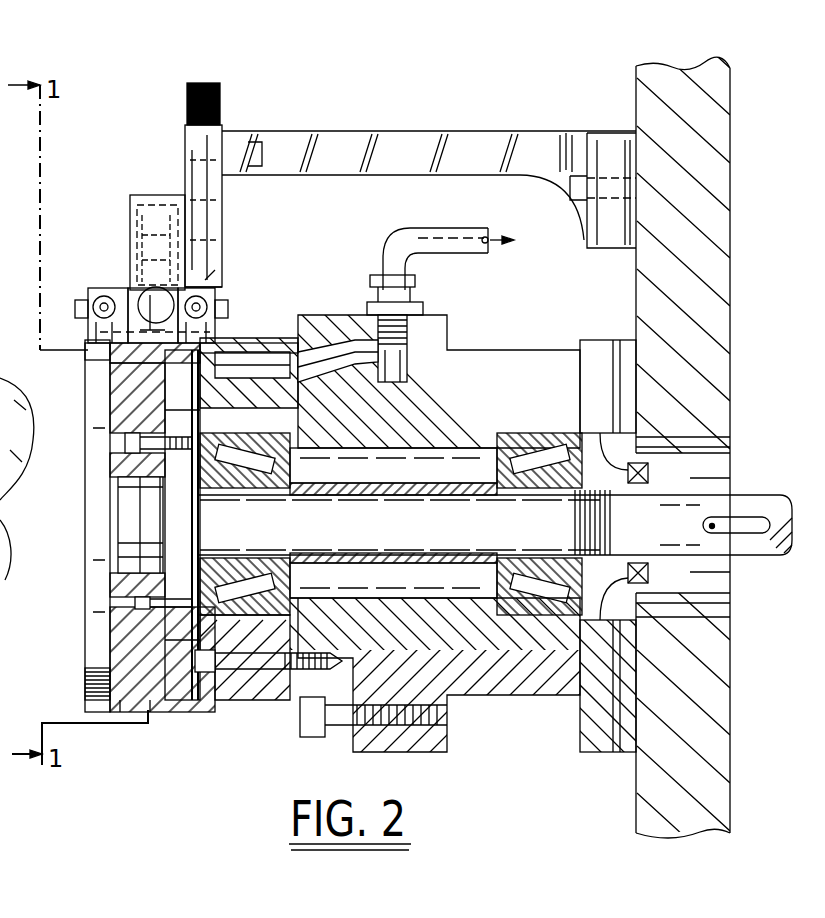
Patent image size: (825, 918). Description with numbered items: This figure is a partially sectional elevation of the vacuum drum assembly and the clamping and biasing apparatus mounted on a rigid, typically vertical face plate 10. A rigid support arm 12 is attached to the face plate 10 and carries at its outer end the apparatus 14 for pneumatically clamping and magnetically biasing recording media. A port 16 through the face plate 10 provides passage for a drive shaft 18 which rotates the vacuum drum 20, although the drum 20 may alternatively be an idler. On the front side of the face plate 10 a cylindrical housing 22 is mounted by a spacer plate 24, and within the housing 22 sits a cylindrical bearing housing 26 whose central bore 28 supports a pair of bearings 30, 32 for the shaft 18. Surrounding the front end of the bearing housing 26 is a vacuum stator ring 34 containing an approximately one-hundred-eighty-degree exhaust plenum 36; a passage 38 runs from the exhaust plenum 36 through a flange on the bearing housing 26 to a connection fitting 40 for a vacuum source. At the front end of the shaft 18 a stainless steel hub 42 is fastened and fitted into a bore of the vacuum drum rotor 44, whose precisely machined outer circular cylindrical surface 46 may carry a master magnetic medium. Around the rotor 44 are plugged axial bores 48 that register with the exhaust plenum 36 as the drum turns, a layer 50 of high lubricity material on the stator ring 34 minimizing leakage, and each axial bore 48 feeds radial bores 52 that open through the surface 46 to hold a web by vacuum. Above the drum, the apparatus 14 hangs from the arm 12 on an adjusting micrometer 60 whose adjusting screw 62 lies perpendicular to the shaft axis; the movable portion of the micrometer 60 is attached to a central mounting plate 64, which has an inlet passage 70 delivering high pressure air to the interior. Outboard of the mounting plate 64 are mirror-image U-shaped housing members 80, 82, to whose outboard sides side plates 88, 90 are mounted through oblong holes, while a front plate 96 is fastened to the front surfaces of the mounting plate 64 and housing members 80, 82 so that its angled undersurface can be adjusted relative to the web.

The face plate 10 is at (693, 252).
The support arm 12 is at (312, 132).
The apparatus for pneumatically clamping and magnetically biasing recording media 14 is at (226, 288).
The port 16 is at (726, 600).
The drive shaft 18 is at (392, 512).
The vacuum drum 20 is at (85, 527).
The cylindrical housing 22 is at (495, 352).
The spacer plate 24 is at (630, 752).
The bearing housing 26 is at (462, 640).
The central bore 28 is at (430, 522).
The bearing 30 is at (245, 524).
The bearing 32 is at (527, 486).
The vacuum stator ring 34 is at (266, 692).
The exhaust plenum 36 is at (248, 364).
The passage 38 is at (318, 385).
The connection fitting 40 is at (417, 283).
The hub 42 is at (200, 516).
The vacuum drum rotor 44 is at (125, 654).
The outer circular cylindrical surface 46 is at (200, 714).
The axial bores 48 is at (118, 424).
The layer of high lubricity material 50 is at (232, 352).
The radial bores 52 is at (115, 372).
The adjusting micrometer 60 is at (185, 172).
The adjusting screw 62 is at (187, 106).
The central mounting plate 64 is at (130, 210).
The inlet passage 70 is at (142, 262).
The housing member 80 is at (140, 290).
The housing member 82 is at (214, 280).
The side plate 88 is at (88, 300).
The side plate 90 is at (220, 296).
The front plate 96 is at (88, 358).